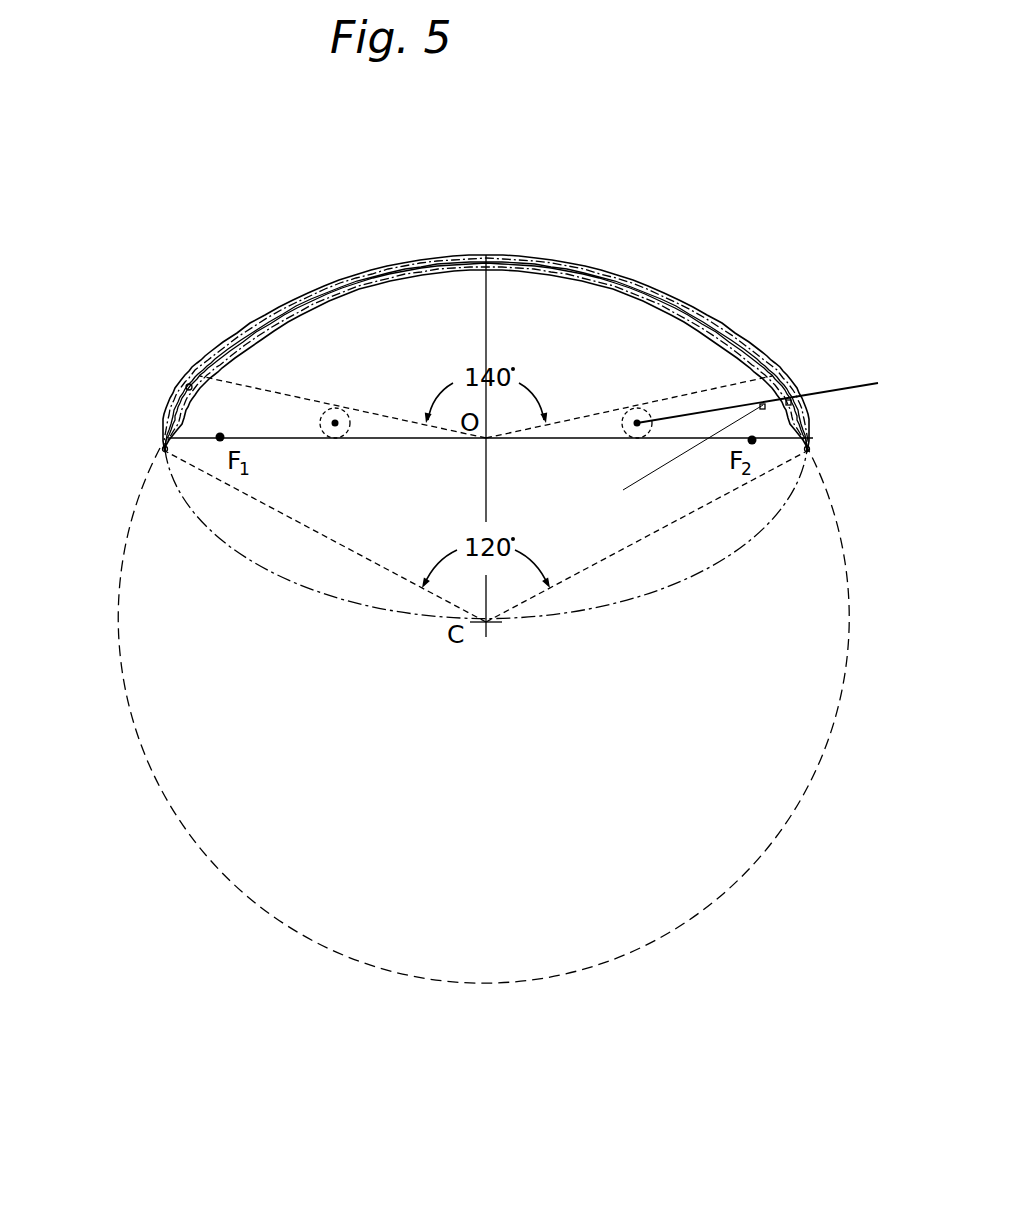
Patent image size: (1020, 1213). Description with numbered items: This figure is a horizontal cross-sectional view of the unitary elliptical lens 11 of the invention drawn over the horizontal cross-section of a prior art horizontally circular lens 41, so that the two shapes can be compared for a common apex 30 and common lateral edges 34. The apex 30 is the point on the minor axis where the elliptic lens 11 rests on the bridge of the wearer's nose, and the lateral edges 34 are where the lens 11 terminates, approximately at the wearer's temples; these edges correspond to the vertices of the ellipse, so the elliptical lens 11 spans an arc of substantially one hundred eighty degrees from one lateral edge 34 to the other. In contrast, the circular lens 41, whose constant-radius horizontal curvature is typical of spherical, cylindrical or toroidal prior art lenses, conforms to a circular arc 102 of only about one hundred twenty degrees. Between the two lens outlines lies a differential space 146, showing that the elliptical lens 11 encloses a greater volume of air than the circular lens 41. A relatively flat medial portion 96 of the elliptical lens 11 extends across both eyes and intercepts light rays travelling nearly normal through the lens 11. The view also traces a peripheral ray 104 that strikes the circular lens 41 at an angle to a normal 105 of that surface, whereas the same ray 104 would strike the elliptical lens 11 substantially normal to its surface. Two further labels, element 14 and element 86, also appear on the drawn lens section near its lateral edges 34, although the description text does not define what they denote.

The medial portion 96 is at (478, 215).
The apex 30 is at (487, 258).
The differential space 146 is at (257, 330).
The outer shell 14 is at (208, 342).
The inner surface 86 is at (186, 385).
The lateral edges 34 is at (162, 443).
The unitary lens 11 is at (704, 307).
The cylindrical lens 41 is at (722, 340).
The peripheral ray 104 is at (825, 391).
The normal 105 is at (653, 472).
The circular arc 102 is at (135, 513).